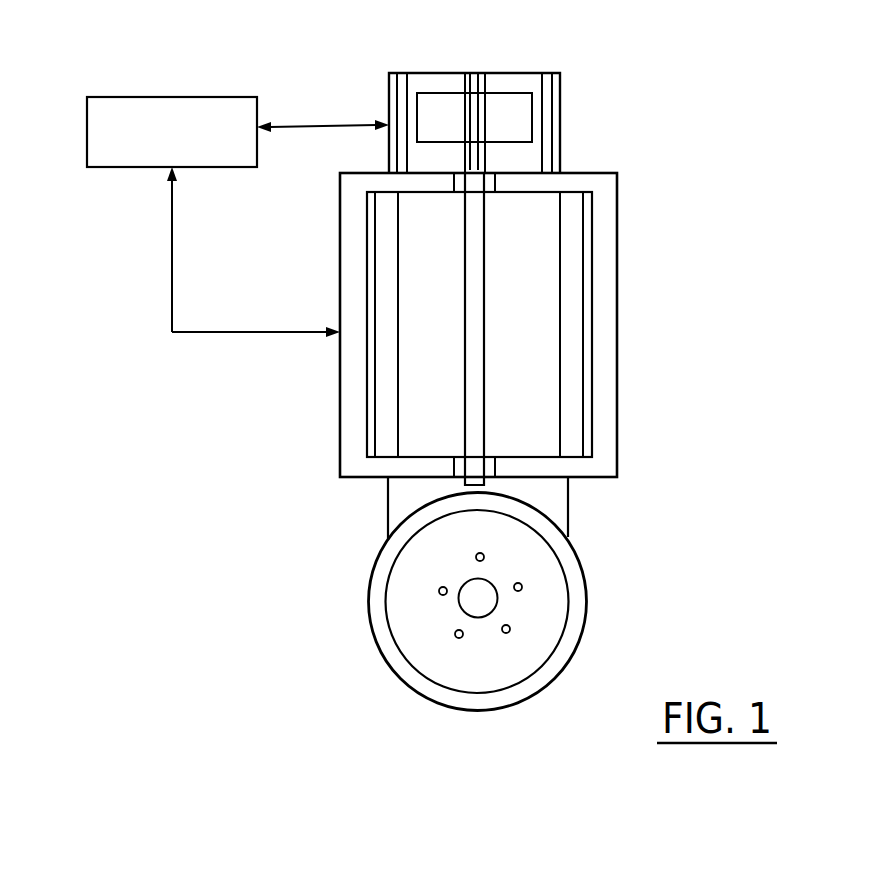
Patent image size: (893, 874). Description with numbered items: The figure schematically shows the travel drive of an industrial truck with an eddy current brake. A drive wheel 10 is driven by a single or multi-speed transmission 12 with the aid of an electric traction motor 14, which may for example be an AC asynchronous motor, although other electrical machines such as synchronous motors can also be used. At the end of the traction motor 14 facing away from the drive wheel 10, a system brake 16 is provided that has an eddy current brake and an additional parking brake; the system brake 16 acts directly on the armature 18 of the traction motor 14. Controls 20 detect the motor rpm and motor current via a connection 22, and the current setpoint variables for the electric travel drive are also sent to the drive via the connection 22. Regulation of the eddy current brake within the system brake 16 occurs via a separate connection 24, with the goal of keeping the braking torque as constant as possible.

The drive wheel 10 is at (585, 575).
The transmission 12 is at (568, 507).
The electric traction motor 14 is at (617, 331).
The system brake 16 is at (560, 118).
The armature 18 is at (481, 270).
The controls 20 is at (112, 167).
The connection 22 is at (168, 263).
The connection 24 is at (307, 126).